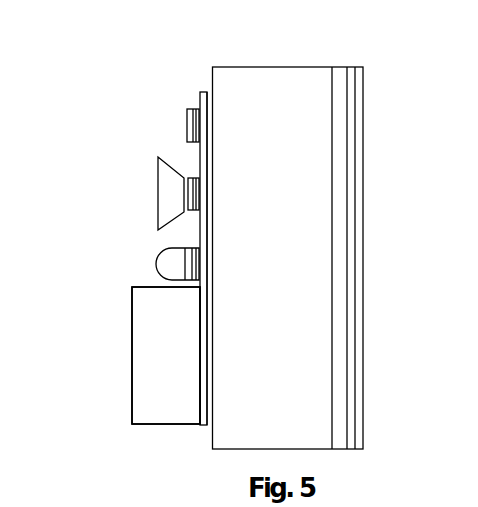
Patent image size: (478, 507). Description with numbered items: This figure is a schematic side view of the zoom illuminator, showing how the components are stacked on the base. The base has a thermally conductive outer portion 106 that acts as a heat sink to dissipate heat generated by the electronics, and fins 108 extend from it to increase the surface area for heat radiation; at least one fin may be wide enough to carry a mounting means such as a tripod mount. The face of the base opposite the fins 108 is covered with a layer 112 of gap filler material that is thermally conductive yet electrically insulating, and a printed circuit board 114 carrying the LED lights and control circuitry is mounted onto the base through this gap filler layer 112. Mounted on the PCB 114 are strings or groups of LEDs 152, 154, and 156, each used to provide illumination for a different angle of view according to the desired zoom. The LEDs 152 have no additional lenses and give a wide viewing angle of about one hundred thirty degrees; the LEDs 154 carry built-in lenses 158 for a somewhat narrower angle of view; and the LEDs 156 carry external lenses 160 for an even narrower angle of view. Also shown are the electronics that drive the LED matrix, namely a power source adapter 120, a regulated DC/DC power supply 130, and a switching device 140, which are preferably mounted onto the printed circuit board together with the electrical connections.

The thermally conductive outer portion 106 is at (240, 268).
The fins 108 is at (337, 193).
The layer of gap filler material 112 is at (203, 96).
The printed circuit board 114 is at (203, 102).
The LEDs 152 is at (192, 130).
The LEDs 154 is at (197, 193).
The LEDs 156 is at (193, 263).
The lenses 158 is at (170, 270).
The lenses 160 is at (178, 188).
The power source adapter 120 is at (156, 373).
The regulated DC/DC power supply 130 is at (156, 373).
The switching device 140 is at (156, 373).